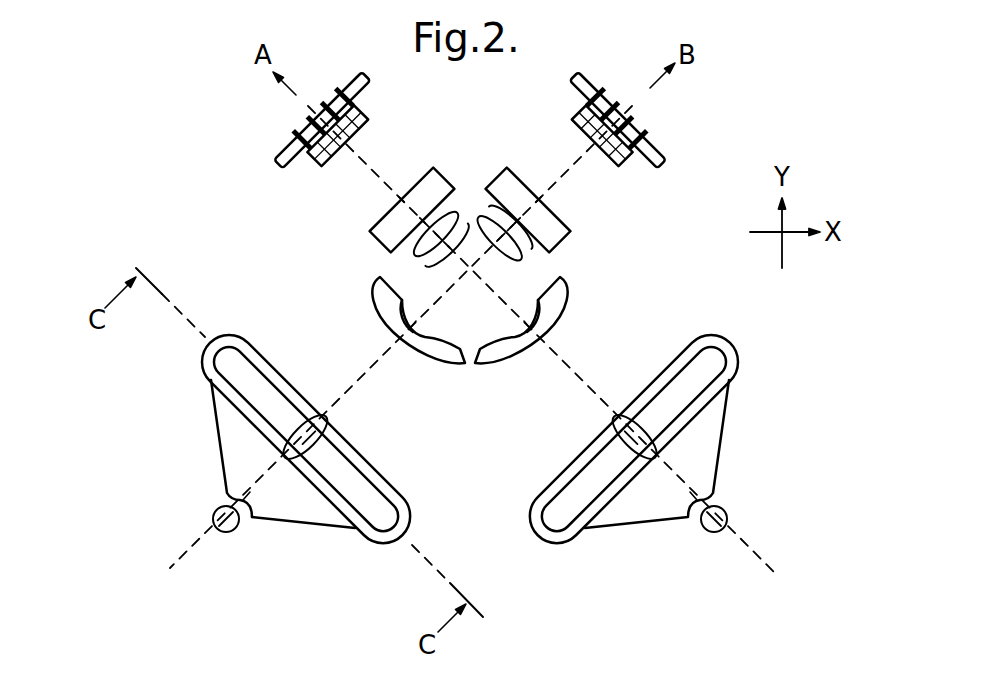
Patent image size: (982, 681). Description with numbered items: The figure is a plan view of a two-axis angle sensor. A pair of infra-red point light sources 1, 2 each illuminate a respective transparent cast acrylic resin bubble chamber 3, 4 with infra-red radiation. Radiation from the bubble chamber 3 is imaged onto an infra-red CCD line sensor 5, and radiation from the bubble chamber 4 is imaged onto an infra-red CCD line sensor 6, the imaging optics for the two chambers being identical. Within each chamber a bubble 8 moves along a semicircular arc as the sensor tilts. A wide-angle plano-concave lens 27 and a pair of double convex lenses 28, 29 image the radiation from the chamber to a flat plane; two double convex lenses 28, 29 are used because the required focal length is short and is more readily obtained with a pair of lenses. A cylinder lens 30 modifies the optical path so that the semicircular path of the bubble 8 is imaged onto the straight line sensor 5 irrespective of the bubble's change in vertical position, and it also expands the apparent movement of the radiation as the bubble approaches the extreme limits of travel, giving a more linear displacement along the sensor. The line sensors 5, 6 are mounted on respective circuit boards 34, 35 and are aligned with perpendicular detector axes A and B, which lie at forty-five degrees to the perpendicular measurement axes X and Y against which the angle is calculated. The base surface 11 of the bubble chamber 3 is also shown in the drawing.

The infra-red point light source 1 is at (213, 510).
The infra-red point light source 2 is at (707, 528).
The bubble chamber 3 is at (265, 450).
The bubble chamber 4 is at (758, 392).
The infra-red CCD line sensor 5 is at (578, 118).
The infra-red CCD line sensor 6 is at (320, 163).
The bubble 8 is at (288, 413).
The base surface 11 is at (305, 511).
The wide-angle plano-concave lens 27 is at (374, 305).
The double convex lens 28 is at (526, 256).
The double convex lens 29 is at (488, 210).
The cylinder lens 30 is at (565, 213).
The circuit board 34 is at (588, 80).
The circuit board 35 is at (358, 82).